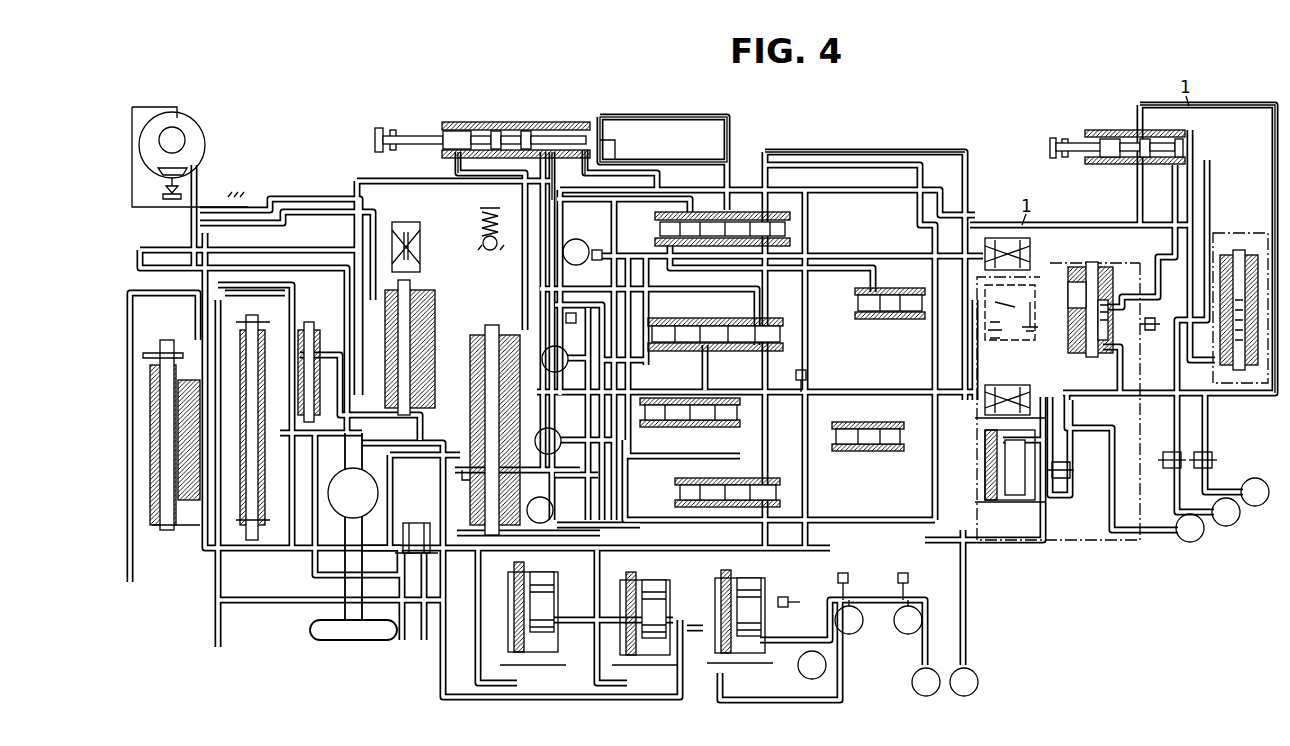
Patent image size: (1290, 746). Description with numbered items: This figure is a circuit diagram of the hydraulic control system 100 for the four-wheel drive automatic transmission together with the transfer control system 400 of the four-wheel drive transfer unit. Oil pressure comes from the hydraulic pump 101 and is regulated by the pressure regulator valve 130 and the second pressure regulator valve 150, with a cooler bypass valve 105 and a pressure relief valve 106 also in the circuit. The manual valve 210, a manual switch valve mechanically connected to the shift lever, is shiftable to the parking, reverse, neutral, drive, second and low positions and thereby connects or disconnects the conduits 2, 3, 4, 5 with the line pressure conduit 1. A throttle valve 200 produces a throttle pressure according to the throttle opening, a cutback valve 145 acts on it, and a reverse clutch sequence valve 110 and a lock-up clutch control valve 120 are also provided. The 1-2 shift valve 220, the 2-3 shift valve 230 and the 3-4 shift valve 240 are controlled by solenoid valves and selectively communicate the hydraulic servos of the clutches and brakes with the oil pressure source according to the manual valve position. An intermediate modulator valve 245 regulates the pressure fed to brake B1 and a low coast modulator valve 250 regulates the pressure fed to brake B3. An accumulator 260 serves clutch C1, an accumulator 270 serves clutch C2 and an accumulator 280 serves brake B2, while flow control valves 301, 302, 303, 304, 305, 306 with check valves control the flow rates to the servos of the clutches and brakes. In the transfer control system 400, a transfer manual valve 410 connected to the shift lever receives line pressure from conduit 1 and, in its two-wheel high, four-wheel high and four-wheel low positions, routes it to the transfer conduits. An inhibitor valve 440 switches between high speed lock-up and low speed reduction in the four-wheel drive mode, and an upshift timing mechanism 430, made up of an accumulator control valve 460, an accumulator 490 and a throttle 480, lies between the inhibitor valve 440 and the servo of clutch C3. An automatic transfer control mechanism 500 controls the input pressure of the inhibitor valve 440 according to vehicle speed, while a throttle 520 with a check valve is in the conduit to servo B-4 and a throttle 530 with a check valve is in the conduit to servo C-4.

The hydraulic control system 100 is at (868, 134).
The hydraulic pump 101 is at (367, 503).
The cooler bypass valve 105 is at (416, 516).
The pressure relief valve 106 is at (476, 229).
The reverse clutch sequence valve 110 is at (714, 428).
The lock-up clutch control valve 120 is at (388, 317).
The pressure regulator valve 130 is at (487, 330).
The cutback valve 145 is at (310, 318).
The second pressure regulator valve 150 is at (165, 528).
The throttle valve 200 is at (257, 514).
The manual valve 210 is at (428, 156).
The 1-2 shift valve 220 is at (797, 333).
The 2-3 shift valve 230 is at (652, 226).
The 3-4 shift valve 240 is at (664, 494).
The intermediate modulator valve 245 is at (872, 448).
The low coast modulator valve 250 is at (912, 320).
The accumulator 260 is at (770, 606).
The accumulator 270 is at (672, 596).
The accumulator 280 is at (560, 600).
The flow control valve 301 is at (833, 593).
The flow control valve 302 is at (790, 610).
The flow control valve 303 is at (598, 249).
The flow control valve 304 is at (887, 593).
The flow control valve 305 is at (821, 379).
The flow control valve 306 is at (568, 323).
The transfer control system 400 is at (1235, 100).
The transfer manual valve 410 is at (1110, 123).
The upshift timing mechanism 430 is at (1095, 292).
The inhibitor valve 440 is at (1232, 226).
The accumulator control valve 460 is at (1100, 275).
The throttle 480 is at (1070, 486).
The accumulator 490 is at (1016, 500).
The automatic transfer control mechanism 500 is at (977, 306).
The throttle with check valve 520 is at (1162, 434).
The throttle with check valve 530 is at (1220, 462).
The conduit 1 is at (553, 170).
The conduit 2 is at (583, 172).
The conduit 3 is at (663, 139).
The conduit 4 is at (618, 152).
The conduit 5 is at (487, 170).